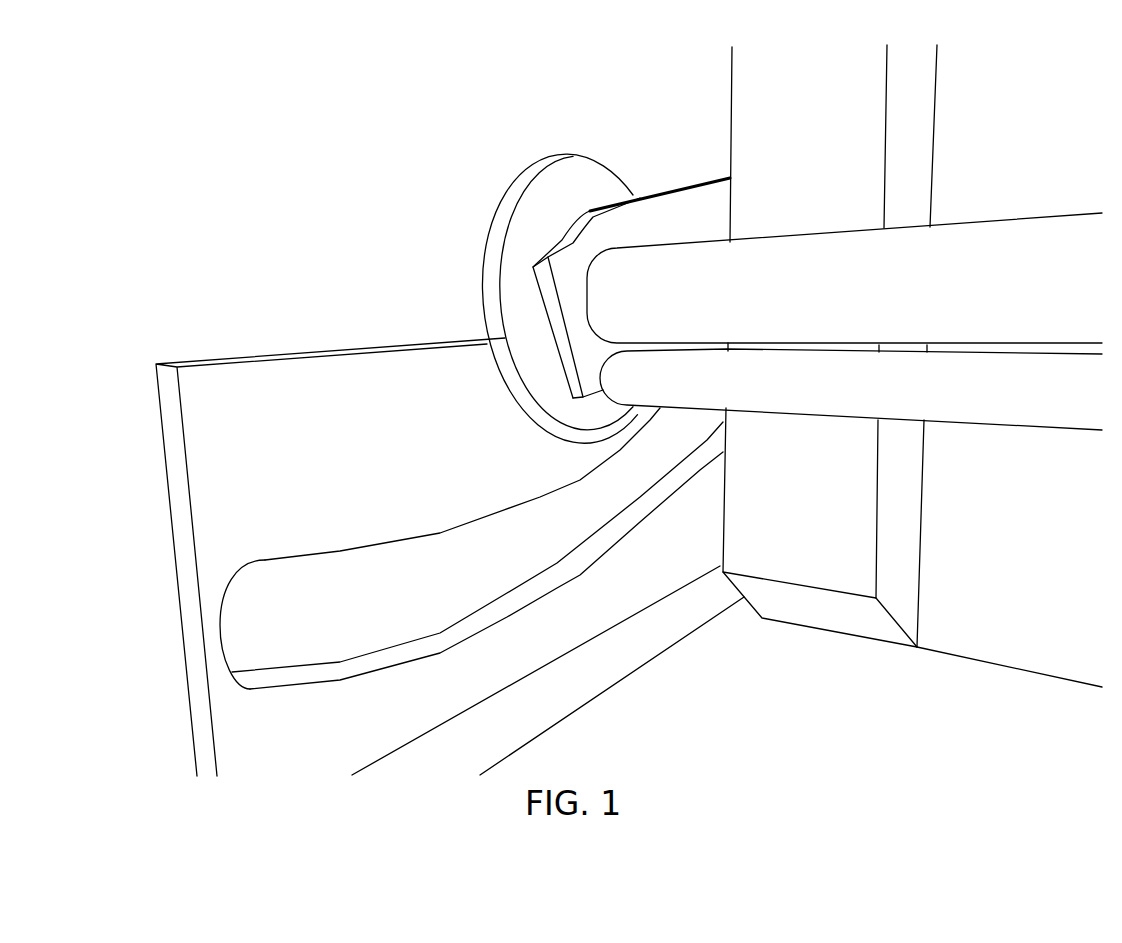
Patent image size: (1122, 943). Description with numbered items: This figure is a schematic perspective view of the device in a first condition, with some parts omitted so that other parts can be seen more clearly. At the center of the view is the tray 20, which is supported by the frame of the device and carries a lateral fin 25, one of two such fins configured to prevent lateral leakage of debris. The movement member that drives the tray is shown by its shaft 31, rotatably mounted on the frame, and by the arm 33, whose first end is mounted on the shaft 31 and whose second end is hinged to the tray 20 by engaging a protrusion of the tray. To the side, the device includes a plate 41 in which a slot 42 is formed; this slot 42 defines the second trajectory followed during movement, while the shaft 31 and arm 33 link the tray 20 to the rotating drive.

The tray 20 is at (1052, 526).
The lateral fin 25 is at (820, 497).
The shaft 31 is at (647, 290).
The arm 33 is at (700, 213).
The plate 41 is at (322, 373).
The slot 42 is at (276, 623).